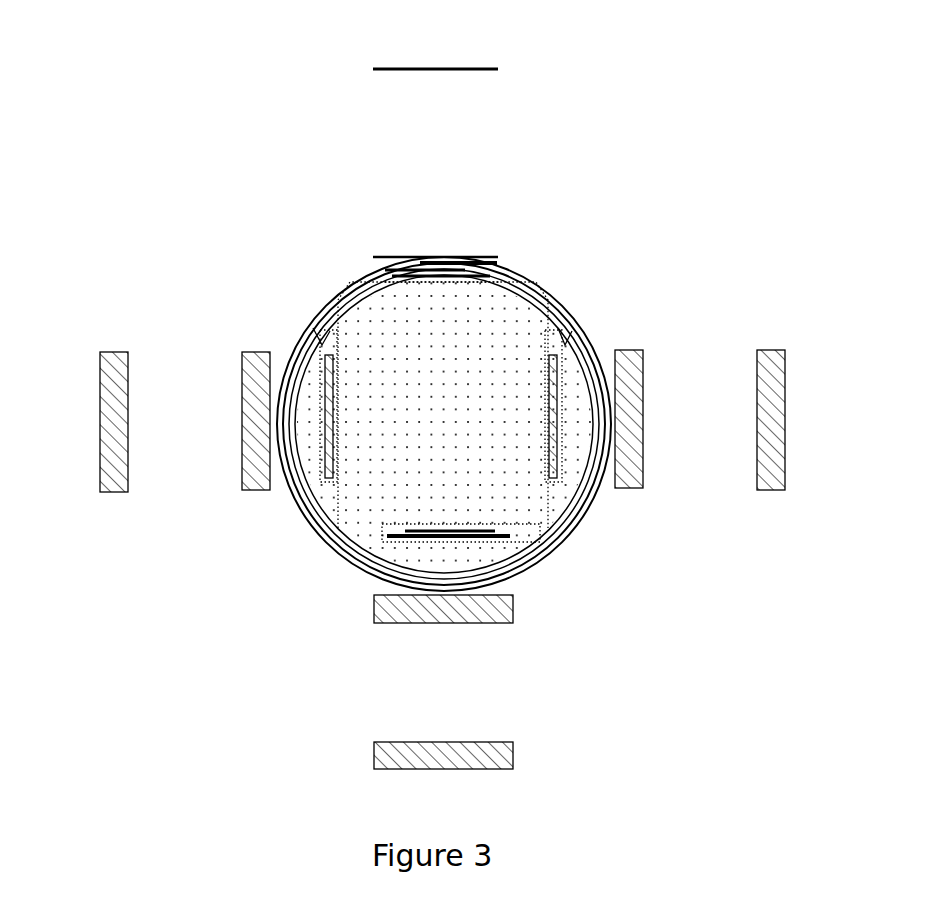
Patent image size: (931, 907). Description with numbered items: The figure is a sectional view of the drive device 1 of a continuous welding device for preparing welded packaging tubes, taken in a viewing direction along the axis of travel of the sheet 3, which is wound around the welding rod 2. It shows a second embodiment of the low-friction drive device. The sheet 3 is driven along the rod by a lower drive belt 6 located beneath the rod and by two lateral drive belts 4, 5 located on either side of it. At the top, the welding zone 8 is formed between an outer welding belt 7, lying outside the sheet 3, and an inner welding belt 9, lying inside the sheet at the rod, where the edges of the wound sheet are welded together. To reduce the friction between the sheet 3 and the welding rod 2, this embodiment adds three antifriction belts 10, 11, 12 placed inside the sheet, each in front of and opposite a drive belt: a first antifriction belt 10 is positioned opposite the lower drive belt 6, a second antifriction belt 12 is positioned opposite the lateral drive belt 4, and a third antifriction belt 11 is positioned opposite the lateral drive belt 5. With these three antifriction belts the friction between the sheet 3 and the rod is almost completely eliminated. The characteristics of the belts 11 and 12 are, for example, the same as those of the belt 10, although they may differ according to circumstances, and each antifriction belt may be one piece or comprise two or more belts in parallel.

The sectional view of the drive device 1 is at (162, 92).
The welding rod 2 is at (500, 328).
The sheet 3 is at (312, 522).
The lateral drive belt 4 is at (122, 413).
The lateral drive belt 5 is at (632, 413).
The lower drive belt 6 is at (420, 610).
The outer welding belt 7 is at (424, 257).
The welding zone 8 is at (496, 240).
The inner welding belt 9 is at (535, 572).
The antifriction belt 10 is at (480, 560).
The antifriction belt 11 is at (575, 352).
The antifriction belt 12 is at (323, 347).